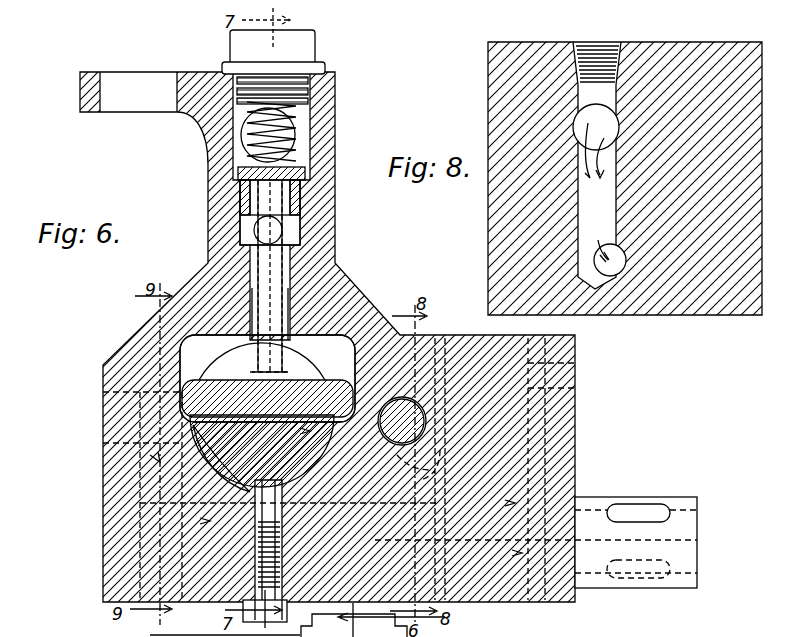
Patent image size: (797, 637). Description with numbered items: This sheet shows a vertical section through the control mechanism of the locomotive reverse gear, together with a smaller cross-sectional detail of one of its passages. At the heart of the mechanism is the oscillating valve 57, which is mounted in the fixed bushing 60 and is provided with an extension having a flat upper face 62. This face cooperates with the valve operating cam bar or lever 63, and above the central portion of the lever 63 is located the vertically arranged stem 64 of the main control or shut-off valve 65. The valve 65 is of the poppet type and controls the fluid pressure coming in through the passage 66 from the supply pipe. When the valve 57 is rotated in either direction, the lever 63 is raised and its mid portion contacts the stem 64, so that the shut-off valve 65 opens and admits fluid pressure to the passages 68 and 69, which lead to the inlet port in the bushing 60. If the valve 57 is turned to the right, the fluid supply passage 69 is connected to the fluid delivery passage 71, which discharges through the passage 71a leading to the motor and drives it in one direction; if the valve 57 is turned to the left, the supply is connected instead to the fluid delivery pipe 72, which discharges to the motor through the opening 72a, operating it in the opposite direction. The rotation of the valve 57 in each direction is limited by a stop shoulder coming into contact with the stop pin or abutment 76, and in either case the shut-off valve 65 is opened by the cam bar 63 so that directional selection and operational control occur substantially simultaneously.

In FIG. 6, the oscillating valve 57 is at (310, 452).
In FIG. 6, the fixed bushing 60 is at (307, 466).
In FIG. 6, the flat upper face 62 is at (292, 418).
In FIG. 6, the valve operating cam bar or lever 63 is at (240, 392).
In FIG. 6, the stem 64 is at (290, 270).
In FIG. 6, the main control or shut-off valve 65 is at (240, 172).
In FIG. 6, the passage 66 is at (246, 135).
In FIG. 6, the passage 68 is at (242, 230).
In FIG. 6, the fluid supply passage 69 is at (255, 283).
In FIG. 6, the fluid delivery passage 71 is at (140, 473).
In FIG. 8, the fluid delivery passage 71 is at (622, 248).
In FIG. 6, the passage 71a is at (618, 515).
In FIG. 6, the fluid delivery pipe 72 is at (440, 460).
In FIG. 8, the fluid delivery pipe 72 is at (612, 243).
In FIG. 6, the opening 72a is at (655, 582).
In FIG. 6, the stop pin or abutment 76 is at (405, 410).